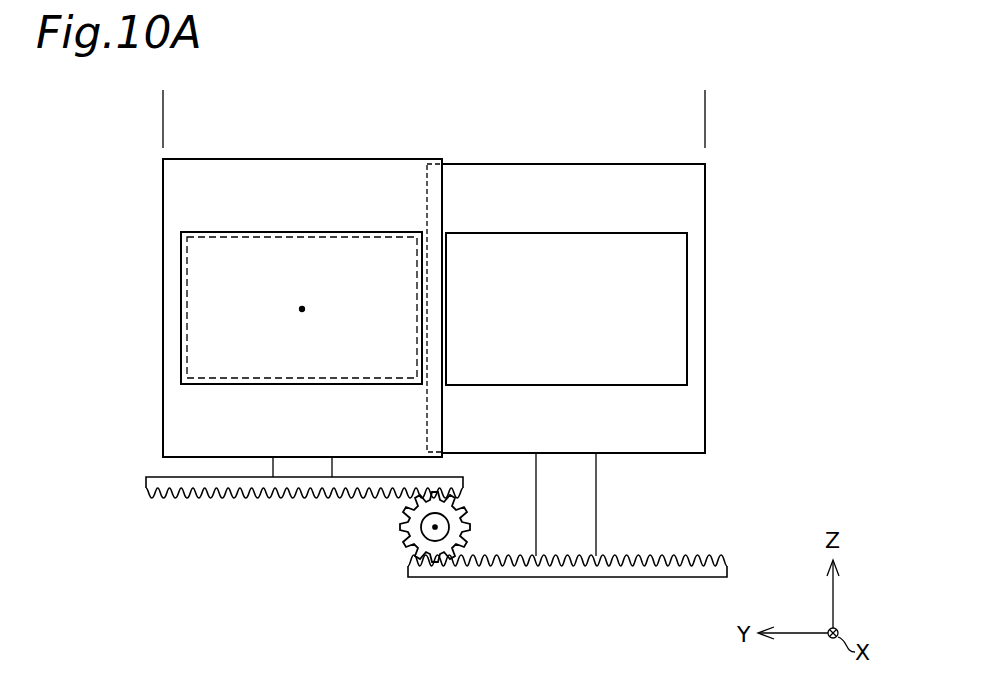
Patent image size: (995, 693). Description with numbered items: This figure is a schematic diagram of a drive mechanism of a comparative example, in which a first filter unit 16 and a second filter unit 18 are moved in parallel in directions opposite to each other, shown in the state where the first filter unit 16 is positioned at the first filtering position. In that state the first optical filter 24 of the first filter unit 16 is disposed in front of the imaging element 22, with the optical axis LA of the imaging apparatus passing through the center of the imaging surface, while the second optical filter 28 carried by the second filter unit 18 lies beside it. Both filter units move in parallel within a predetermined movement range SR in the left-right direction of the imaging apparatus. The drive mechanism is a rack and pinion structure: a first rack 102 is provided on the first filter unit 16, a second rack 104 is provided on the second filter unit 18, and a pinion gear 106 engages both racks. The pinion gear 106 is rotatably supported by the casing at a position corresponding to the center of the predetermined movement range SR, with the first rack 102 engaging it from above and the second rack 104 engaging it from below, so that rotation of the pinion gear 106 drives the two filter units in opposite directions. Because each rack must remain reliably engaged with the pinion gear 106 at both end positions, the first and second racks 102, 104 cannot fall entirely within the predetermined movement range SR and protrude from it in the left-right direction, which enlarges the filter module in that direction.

The first filter unit 16 is at (178, 197).
The second filter unit 18 is at (688, 200).
The imaging element 22 is at (187, 306).
The first optical filter 24 is at (316, 357).
The second optical filter 28 is at (584, 359).
The first rack 102 is at (146, 481).
The second rack 104 is at (408, 562).
The pinion gear 106 is at (462, 523).
The predetermined movement range SR is at (703, 101).
The optical axis LA is at (302, 309).